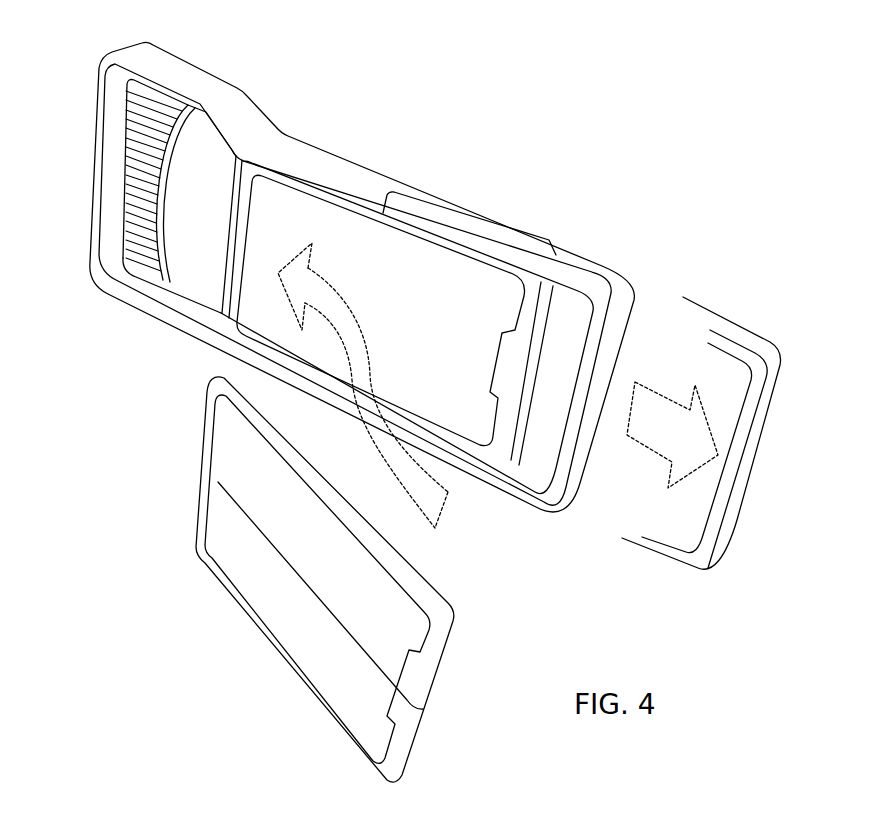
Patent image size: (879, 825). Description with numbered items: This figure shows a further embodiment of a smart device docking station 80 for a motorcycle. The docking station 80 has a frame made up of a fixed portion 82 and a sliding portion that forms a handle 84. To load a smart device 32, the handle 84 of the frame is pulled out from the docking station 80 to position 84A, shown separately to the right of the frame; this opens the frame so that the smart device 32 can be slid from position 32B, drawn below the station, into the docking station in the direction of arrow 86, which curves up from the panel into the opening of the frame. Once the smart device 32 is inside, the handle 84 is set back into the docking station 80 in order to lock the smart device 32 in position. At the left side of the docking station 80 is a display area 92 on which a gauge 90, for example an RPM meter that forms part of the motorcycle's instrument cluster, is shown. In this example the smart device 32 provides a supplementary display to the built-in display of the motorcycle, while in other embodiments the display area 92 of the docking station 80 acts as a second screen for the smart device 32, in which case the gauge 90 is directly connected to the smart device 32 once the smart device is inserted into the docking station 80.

The docking station 80 is at (58, 61).
The fixed portion 82 is at (317, 149).
The handle 84 is at (600, 274).
The pulled-out position of handle 84A is at (757, 334).
The smart device 32 is at (530, 373).
The starting position of smart device 32B is at (447, 650).
The arrow 86 is at (440, 521).
The gauge 90 is at (145, 277).
The display area 92 is at (197, 308).